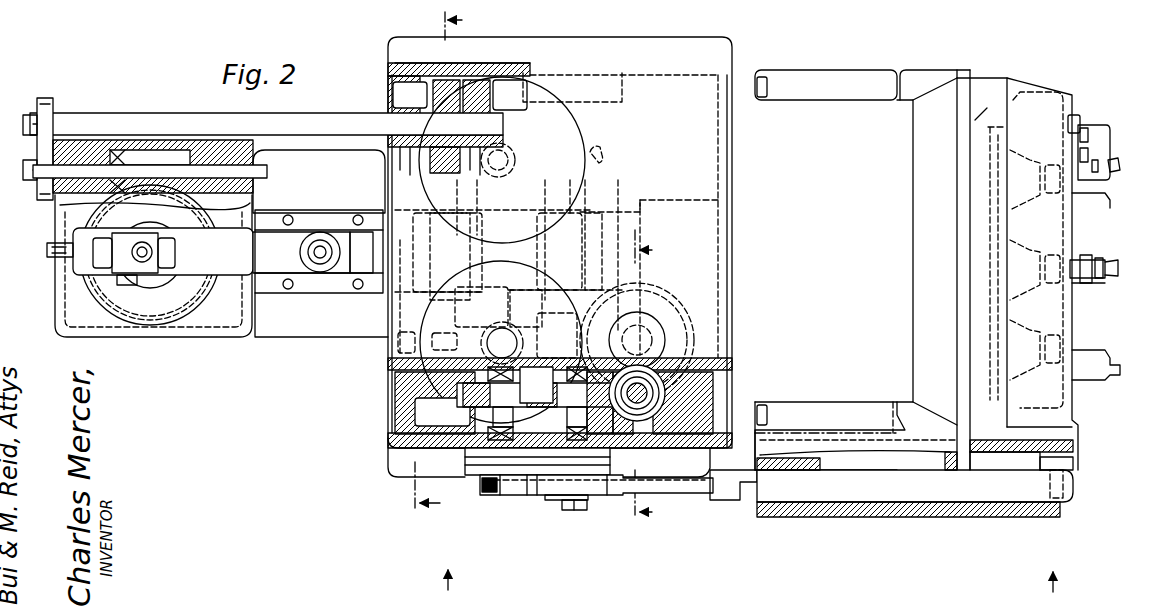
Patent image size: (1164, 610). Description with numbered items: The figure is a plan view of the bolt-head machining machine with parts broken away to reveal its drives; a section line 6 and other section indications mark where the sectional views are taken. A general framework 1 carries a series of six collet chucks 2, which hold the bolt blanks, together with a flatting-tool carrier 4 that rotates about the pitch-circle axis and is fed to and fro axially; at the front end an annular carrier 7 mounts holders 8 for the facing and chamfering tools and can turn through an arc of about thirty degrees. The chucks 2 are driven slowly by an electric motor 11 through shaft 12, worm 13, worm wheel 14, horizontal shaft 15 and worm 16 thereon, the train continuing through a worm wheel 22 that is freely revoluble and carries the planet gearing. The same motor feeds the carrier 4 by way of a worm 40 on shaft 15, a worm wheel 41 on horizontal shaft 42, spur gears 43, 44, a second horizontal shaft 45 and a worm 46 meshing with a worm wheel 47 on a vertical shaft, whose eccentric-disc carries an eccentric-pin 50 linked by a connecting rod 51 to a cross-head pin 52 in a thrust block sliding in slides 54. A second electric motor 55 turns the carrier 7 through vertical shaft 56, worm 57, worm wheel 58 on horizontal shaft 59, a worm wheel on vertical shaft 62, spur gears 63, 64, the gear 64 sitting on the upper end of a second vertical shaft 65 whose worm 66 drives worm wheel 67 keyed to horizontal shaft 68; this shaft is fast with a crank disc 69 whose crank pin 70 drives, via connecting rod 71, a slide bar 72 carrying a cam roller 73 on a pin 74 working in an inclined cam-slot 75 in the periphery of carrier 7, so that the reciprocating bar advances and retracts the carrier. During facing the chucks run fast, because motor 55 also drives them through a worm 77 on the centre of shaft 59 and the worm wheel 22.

The framework 1 is at (916, 270).
The collet chuck 2 is at (1025, 163).
The flatting-tool carrier 4 is at (652, 377).
The section line 6 / bracket 6 is at (1120, 132).
The annular carrier 7 is at (1035, 88).
The holder 8 is at (1118, 190).
The electric motor 11 is at (480, 268).
The shaft 12 is at (491, 331).
The worm 13 is at (500, 328).
The worm wheel 14 is at (388, 357).
The horizontal shaft 15 is at (510, 269).
The worm 16 is at (321, 315).
The worm wheel 22 is at (598, 198).
The worm 40 is at (420, 160).
The worm wheel 41 is at (420, 70).
The horizontal shaft 42 is at (340, 125).
The spur gear 43 is at (48, 108).
The spur gear 44 is at (47, 186).
The second horizontal shaft 45 is at (268, 176).
The worm 46 is at (158, 158).
The worm wheel 47 is at (167, 316).
The eccentric-pin 50 is at (140, 262).
The connecting rod 51 is at (228, 262).
The cross-head pin 52 is at (320, 252).
The slide 54 is at (312, 282).
The electric motor 55 is at (575, 88).
The vertical shaft 56 is at (510, 150).
The worm 57 is at (500, 207).
The worm wheel 58 is at (602, 160).
The horizontal shaft 59 is at (580, 183).
The vertical shaft 62 is at (652, 338).
The spur gear 63 is at (645, 325).
The spur gear 64 is at (655, 386).
The second vertical shaft 65 is at (640, 402).
The worm 66 is at (676, 447).
The worm wheel 67 is at (420, 403).
The horizontal shaft 68 is at (533, 390).
The crank disc 69 is at (480, 465).
The crank pin 70 is at (567, 510).
The connecting rod 71 is at (683, 490).
The slide bar 72 is at (860, 488).
The cam roller 73 is at (1073, 465).
The pin 74 is at (1063, 490).
The cam-slot 75 is at (1000, 462).
The worm 77 is at (480, 228).